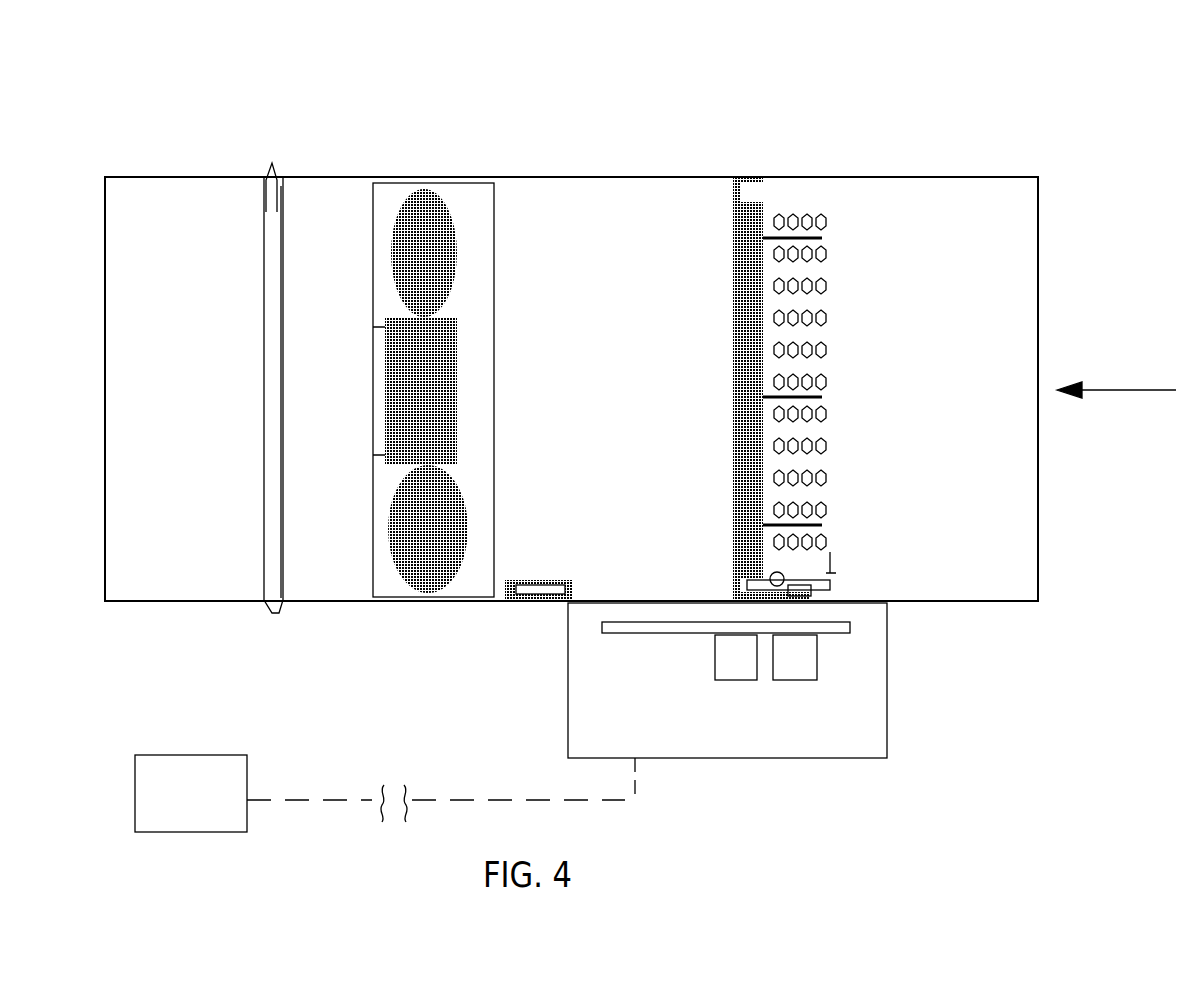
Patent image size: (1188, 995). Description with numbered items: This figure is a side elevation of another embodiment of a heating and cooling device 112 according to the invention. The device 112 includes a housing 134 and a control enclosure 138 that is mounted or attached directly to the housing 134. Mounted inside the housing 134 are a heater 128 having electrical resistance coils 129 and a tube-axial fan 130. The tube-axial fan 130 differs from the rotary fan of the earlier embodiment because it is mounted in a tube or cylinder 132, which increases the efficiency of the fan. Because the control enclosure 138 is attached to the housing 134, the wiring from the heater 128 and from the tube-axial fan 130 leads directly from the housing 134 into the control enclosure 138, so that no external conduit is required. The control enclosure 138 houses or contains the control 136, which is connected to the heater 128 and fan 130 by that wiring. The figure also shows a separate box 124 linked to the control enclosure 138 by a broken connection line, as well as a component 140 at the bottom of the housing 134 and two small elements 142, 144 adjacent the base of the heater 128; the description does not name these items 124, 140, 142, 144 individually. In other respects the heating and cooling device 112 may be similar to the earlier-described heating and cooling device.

The heating and cooling device 112 is at (1133, 100).
The controller 124 is at (192, 755).
The heater 128 is at (826, 221).
The electrical resistance coils 129 is at (828, 509).
The tube-axial fan 130 is at (407, 578).
The tube or cylinder 132 is at (456, 183).
The housing 134 is at (606, 178).
The control 136 is at (631, 634).
The control enclosure 138 is at (887, 705).
The sensor 140 is at (523, 600).
The connector 142 is at (778, 586).
The switch 144 is at (812, 592).